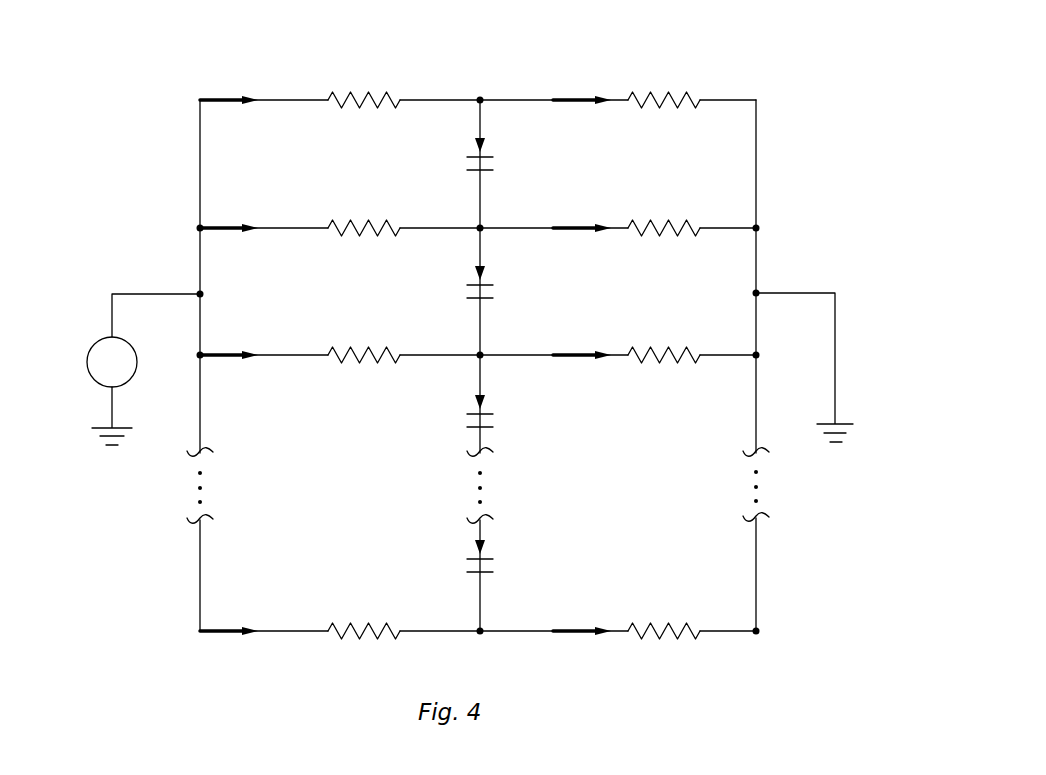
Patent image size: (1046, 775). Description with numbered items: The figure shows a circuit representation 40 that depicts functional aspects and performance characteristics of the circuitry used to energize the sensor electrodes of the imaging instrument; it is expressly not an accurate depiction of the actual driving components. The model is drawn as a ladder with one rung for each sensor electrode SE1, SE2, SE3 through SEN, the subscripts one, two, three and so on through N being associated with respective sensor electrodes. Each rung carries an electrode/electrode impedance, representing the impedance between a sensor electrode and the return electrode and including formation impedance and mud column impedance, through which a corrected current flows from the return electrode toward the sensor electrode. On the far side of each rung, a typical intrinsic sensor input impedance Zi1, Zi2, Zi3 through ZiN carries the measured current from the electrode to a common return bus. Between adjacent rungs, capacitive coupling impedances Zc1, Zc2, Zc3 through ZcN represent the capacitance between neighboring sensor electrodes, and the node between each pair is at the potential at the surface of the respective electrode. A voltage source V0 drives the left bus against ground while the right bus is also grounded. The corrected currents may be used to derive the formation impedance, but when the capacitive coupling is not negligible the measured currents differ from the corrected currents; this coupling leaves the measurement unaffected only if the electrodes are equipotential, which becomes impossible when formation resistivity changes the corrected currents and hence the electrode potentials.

The circuit representation 40 is at (143, 160).
The sensor electrode SE1 is at (428, 98).
The sensor electrode SE2 is at (428, 226).
The sensor electrode SE3 is at (428, 353).
The sensor electrode SEN is at (428, 629).
The intrinsic sensor input impedance Zi1 is at (664, 82).
The intrinsic sensor input impedance Zi2 is at (664, 210).
The intrinsic sensor input impedance Zi3 is at (664, 337).
The intrinsic sensor input impedance ZiN is at (664, 614).
The capacitive coupling impedance Zc1 is at (485, 158).
The capacitive coupling impedance Zc2 is at (486, 287).
The capacitive coupling impedance Zc3 is at (486, 417).
The capacitive coupling impedance ZcN is at (487, 560).
The voltage source V0 is at (145, 368).